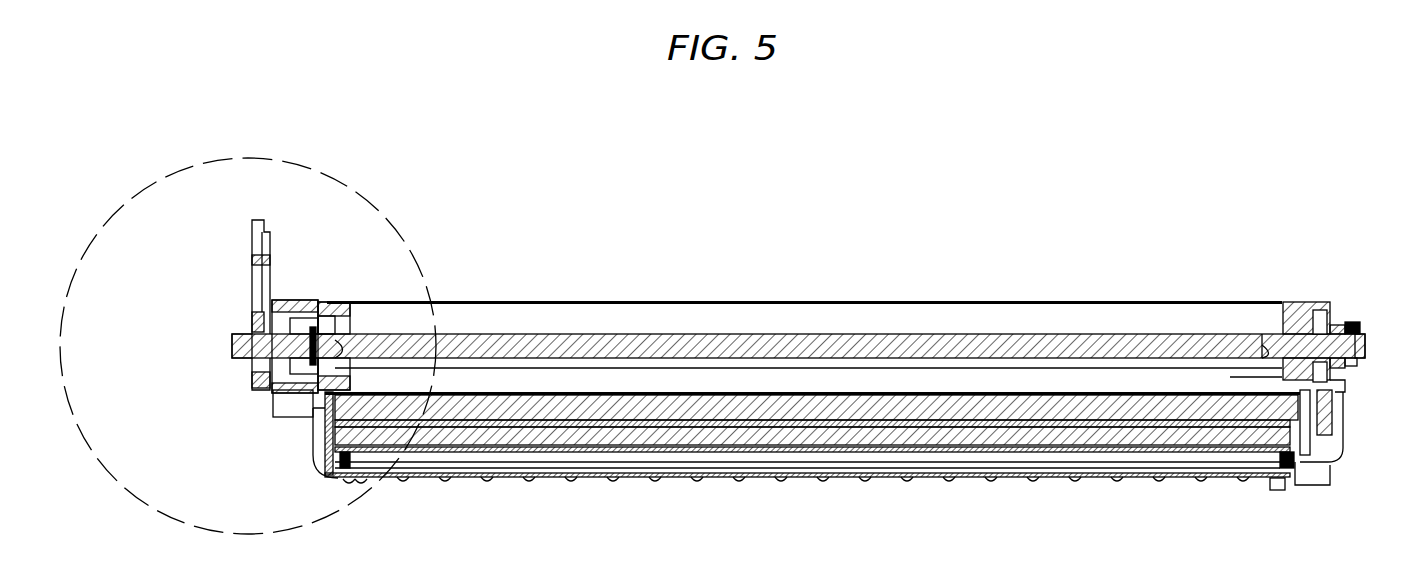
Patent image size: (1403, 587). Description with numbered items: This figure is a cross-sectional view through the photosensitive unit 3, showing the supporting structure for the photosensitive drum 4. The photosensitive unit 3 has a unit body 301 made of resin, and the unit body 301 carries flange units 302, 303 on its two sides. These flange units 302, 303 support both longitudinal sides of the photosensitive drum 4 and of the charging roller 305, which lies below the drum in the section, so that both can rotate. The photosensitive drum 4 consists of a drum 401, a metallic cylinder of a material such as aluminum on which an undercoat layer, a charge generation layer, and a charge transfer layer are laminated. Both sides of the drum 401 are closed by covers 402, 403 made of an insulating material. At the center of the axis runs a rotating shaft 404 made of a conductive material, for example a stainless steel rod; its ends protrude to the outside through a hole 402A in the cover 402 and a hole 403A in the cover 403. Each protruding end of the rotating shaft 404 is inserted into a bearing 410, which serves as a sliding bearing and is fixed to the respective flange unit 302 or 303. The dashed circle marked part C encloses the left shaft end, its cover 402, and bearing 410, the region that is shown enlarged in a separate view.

The photosensitive unit 3 is at (1072, 242).
The photosensitive drum 4 is at (752, 306).
The unit body 301 is at (858, 480).
The flange unit 302 is at (255, 385).
The flange unit 303 is at (1350, 324).
The charging roller 305 is at (981, 403).
The drum 401 is at (603, 301).
The cover 402 is at (306, 298).
The hole 402A is at (372, 340).
The cover 403 is at (1318, 300).
The hole 403A is at (1263, 345).
The rotating shaft 404 is at (901, 340).
The bearing 410 is at (238, 334).
The part c C is at (334, 170).